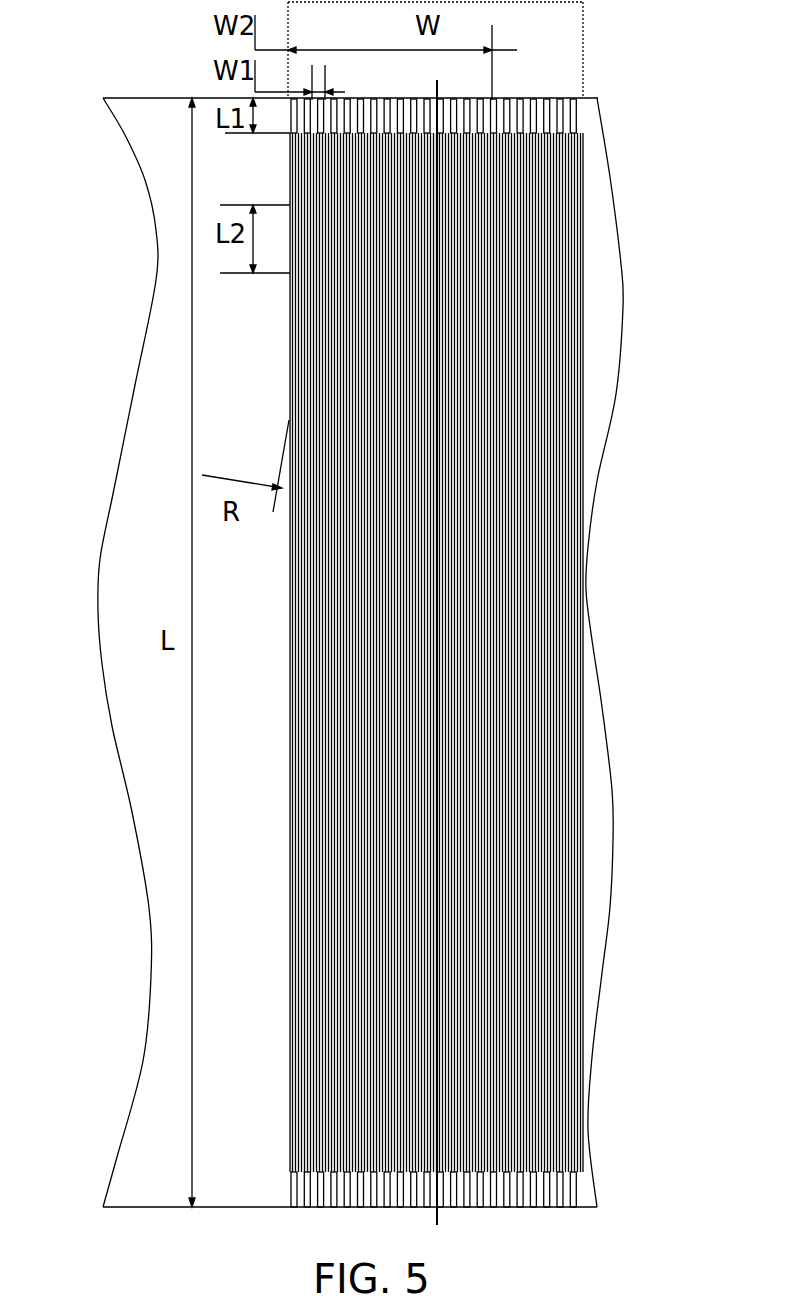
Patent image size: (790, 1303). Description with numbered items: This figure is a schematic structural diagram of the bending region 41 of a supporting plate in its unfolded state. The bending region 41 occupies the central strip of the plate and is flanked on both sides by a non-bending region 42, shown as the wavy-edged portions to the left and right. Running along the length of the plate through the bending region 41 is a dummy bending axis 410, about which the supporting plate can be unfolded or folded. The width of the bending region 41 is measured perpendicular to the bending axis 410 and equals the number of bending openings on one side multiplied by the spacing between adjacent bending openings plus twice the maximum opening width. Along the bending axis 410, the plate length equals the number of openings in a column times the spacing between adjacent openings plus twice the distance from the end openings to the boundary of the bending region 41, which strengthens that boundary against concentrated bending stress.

The bending region 41 is at (555, 577).
The non-bending region 42 is at (150, 815).
The bending axis 410 is at (437, 1220).